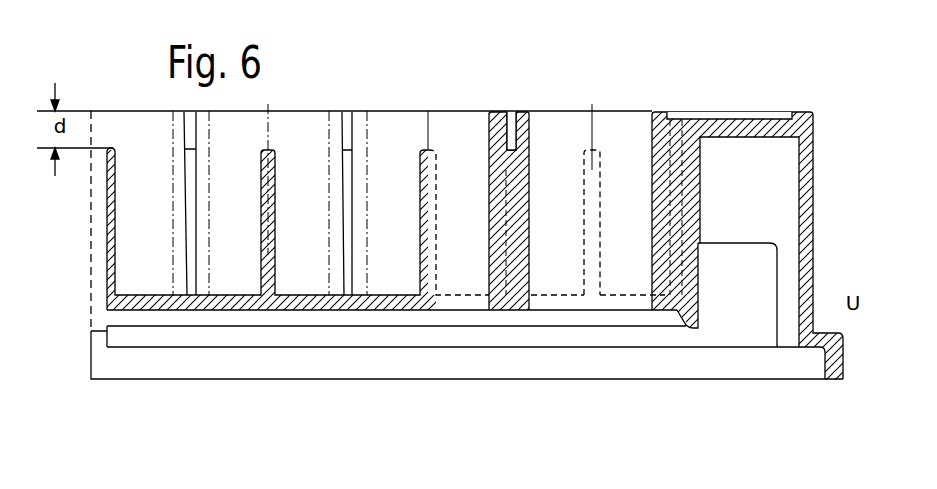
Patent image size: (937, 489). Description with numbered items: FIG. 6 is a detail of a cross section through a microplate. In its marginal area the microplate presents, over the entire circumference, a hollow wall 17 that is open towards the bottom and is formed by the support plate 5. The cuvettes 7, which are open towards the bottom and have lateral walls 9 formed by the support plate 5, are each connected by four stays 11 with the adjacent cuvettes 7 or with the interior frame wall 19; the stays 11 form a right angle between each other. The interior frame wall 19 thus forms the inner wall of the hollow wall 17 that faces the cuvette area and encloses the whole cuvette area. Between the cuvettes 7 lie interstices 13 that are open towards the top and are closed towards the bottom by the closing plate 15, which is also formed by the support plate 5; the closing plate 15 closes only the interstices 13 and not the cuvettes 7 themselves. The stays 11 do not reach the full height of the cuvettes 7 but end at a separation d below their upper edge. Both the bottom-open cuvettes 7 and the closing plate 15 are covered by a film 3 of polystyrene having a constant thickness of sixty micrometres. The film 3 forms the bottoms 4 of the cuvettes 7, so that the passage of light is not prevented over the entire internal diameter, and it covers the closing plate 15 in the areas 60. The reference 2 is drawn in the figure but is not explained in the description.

The housing 2 is at (821, 247).
The film 3 is at (183, 313).
The bottoms 4 is at (594, 312).
The support plate 5 is at (703, 126).
The cuvettes 7 is at (440, 283).
The lateral walls 9 is at (517, 162).
The stays 11 is at (523, 112).
The interstices 13 is at (388, 265).
The closing plate 15 is at (298, 313).
The hollow wall 17 is at (762, 197).
The interior frame wall 19 is at (705, 170).
The areas 60 is at (245, 313).